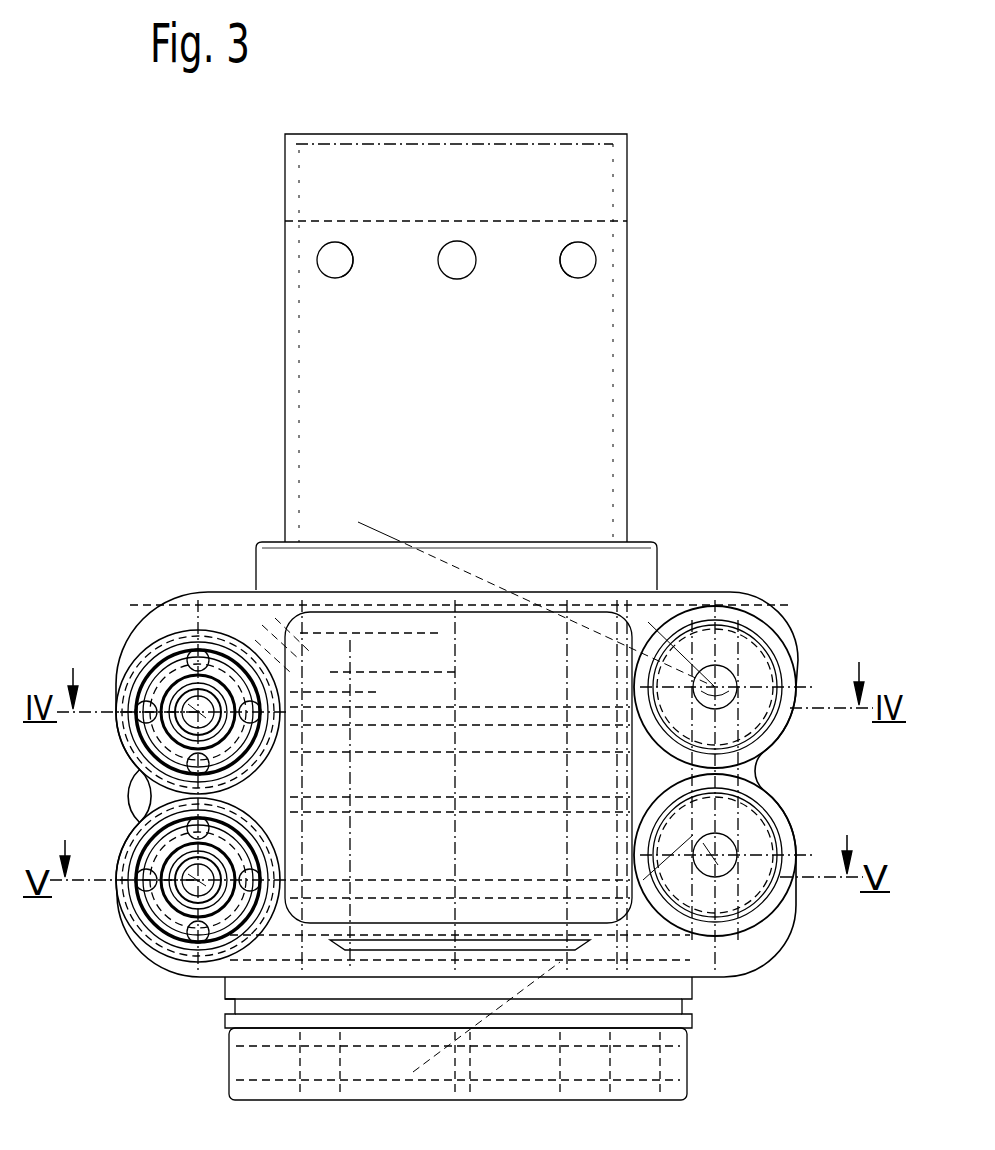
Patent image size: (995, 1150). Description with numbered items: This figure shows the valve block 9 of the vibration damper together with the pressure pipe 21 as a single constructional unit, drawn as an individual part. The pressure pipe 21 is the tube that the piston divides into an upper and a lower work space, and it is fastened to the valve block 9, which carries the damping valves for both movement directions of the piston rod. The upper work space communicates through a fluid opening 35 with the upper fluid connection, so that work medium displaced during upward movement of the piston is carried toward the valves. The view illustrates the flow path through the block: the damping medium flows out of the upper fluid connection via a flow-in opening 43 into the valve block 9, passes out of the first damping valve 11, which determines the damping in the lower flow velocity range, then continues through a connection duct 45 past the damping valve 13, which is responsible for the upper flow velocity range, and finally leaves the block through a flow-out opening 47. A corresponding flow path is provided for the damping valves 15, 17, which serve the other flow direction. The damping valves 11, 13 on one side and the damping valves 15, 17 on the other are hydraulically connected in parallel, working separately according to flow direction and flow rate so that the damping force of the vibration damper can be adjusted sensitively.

The valve block 9 is at (246, 535).
The first damping valve 11 is at (133, 599).
The damping valve 13 is at (118, 923).
The damping valve 15 is at (752, 948).
The damping valve 17 is at (778, 600).
The pressure pipe 21 is at (295, 322).
The fluid opening 35 is at (287, 250).
The flow-in opening 43 is at (285, 638).
The connection duct 45 is at (150, 796).
The flow-out opening 47 is at (303, 923).